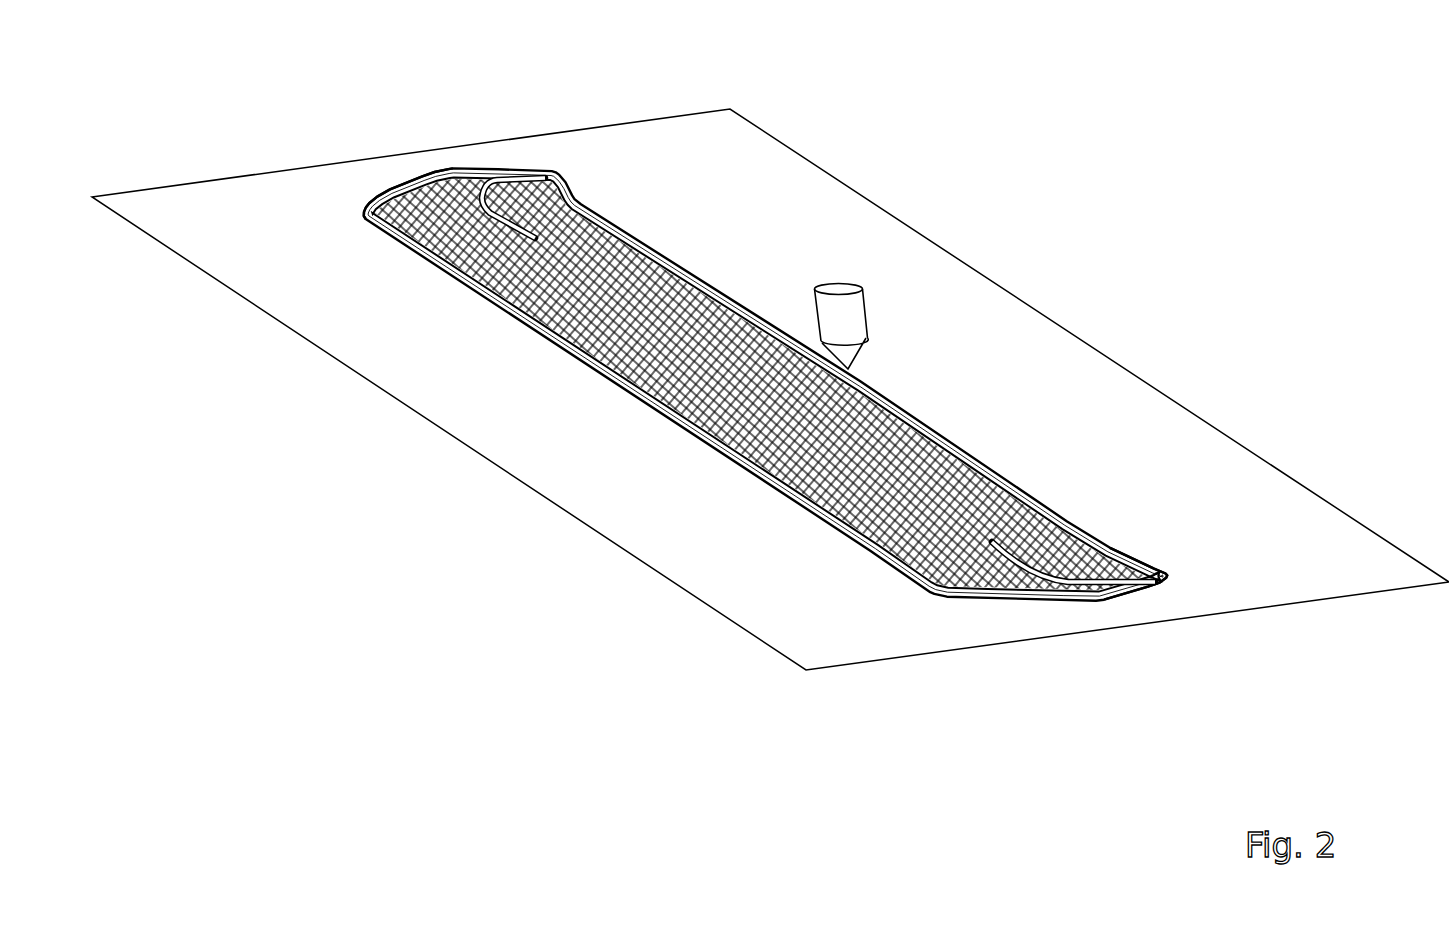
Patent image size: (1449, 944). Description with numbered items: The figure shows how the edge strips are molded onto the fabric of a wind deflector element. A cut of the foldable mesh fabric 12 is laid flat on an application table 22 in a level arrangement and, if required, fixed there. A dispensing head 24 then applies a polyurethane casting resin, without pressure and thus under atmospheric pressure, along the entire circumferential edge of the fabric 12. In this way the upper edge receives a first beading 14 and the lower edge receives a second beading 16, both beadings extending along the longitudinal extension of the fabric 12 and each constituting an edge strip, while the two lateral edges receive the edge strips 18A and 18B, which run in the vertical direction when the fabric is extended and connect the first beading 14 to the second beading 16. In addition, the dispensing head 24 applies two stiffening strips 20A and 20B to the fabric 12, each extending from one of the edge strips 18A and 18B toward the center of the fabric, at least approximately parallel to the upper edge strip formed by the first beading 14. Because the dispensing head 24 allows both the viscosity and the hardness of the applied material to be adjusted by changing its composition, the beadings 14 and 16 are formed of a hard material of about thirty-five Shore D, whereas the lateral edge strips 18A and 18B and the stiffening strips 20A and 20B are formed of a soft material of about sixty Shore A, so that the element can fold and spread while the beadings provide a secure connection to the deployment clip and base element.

The fabric 12 is at (837, 470).
The first beading 14 is at (730, 297).
The second beading 16 is at (628, 365).
The edge strip 18A is at (1143, 590).
The edge strip 18B is at (474, 168).
The stiffening strip 20A is at (1023, 573).
The stiffening strip 20B is at (497, 213).
The application table 22 is at (1177, 460).
The dispensing head 24 is at (852, 308).